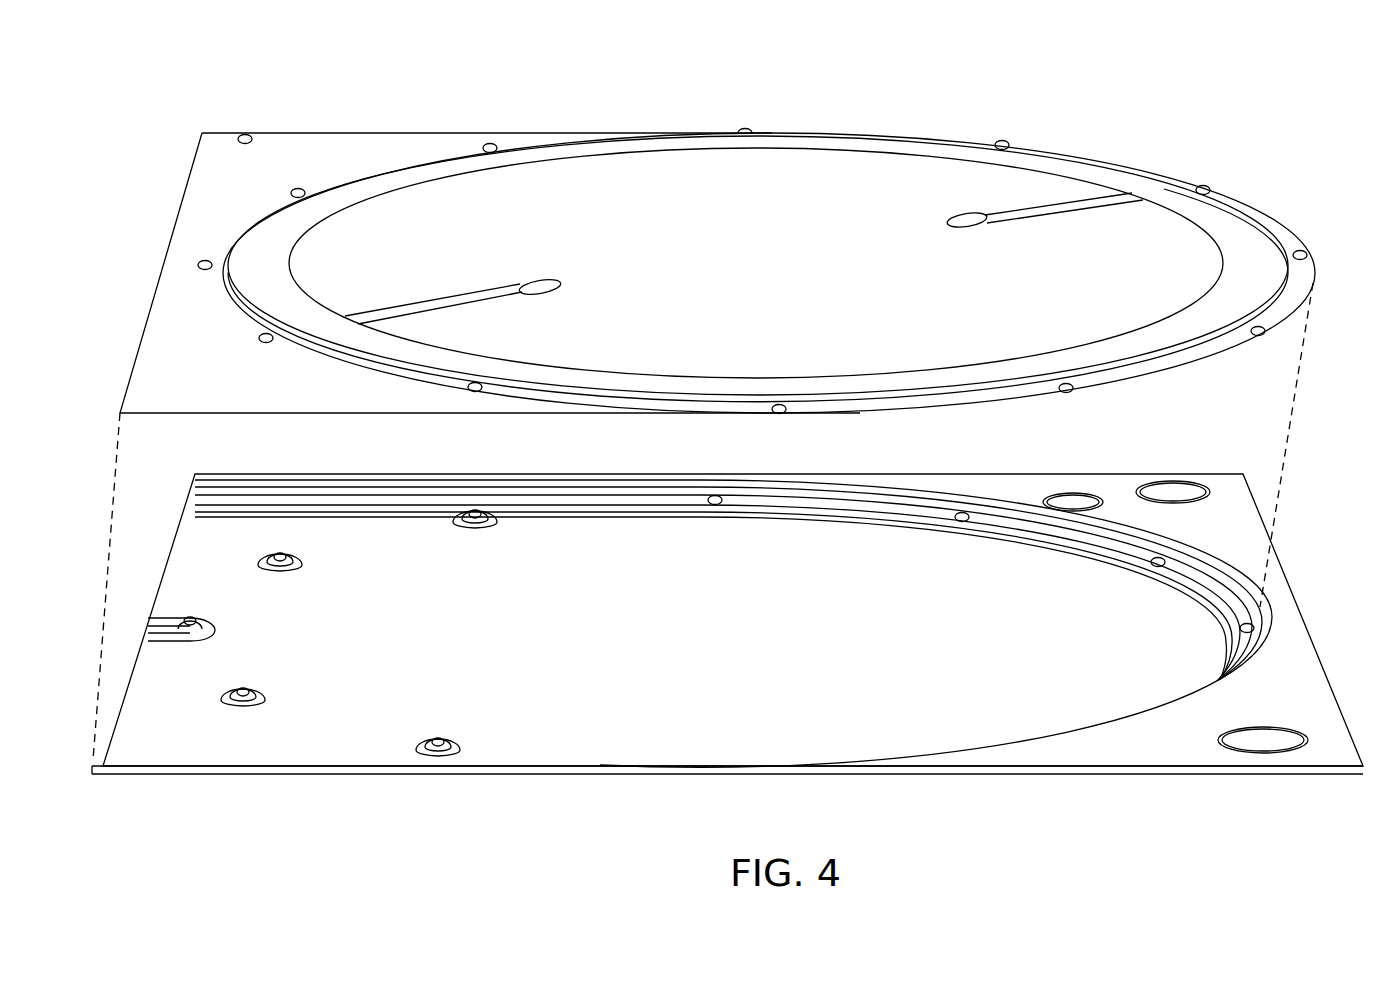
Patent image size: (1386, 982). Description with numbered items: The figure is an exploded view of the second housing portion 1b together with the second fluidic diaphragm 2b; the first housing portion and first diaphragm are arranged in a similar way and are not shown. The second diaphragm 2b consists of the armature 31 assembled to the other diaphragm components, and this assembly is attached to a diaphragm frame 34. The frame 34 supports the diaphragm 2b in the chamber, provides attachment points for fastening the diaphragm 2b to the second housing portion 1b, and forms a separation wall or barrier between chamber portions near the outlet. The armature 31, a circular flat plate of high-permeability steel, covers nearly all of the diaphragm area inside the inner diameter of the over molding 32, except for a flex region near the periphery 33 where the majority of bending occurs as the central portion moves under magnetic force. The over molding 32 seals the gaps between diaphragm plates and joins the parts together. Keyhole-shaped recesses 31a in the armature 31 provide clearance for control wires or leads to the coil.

The second fluidic diaphragm 2b is at (331, 112).
The diaphragm frame 34 is at (138, 350).
The periphery of the diaphragm 33 is at (1304, 273).
The over molding 32 is at (1258, 250).
The armature 31 is at (818, 182).
The keyhole-shaped recess 31a is at (1038, 209).
The second housing portion 1b is at (1314, 642).